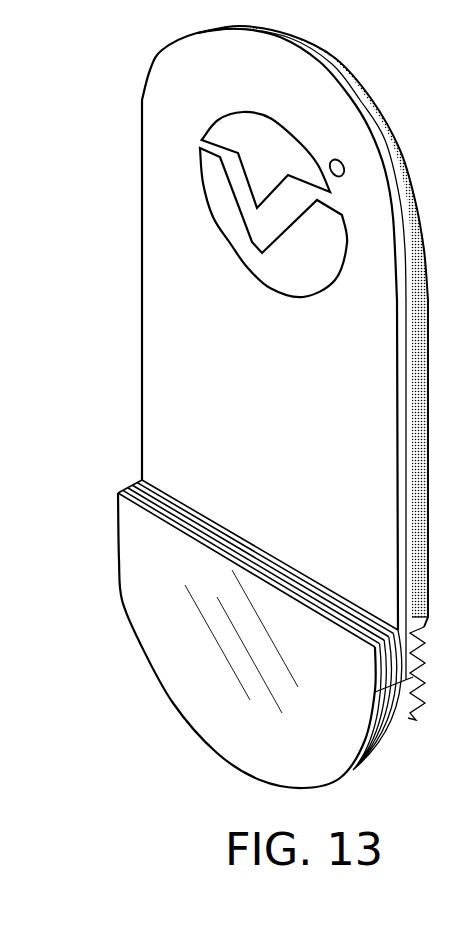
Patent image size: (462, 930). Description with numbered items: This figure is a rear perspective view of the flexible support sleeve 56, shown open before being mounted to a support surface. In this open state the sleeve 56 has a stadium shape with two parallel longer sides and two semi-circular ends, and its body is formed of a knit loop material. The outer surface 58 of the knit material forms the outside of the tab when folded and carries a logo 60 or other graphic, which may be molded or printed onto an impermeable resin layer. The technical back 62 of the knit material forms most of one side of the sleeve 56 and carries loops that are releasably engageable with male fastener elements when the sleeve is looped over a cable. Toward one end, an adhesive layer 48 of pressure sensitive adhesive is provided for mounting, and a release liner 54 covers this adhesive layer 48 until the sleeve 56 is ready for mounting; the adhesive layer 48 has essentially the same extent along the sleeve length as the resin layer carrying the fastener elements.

The support sleeve 56 is at (96, 250).
The outer surface 58 is at (185, 417).
The technical back 62 is at (348, 88).
The logo 60 is at (248, 272).
The adhesive layer 48 is at (140, 483).
The release liner 54 is at (147, 605).